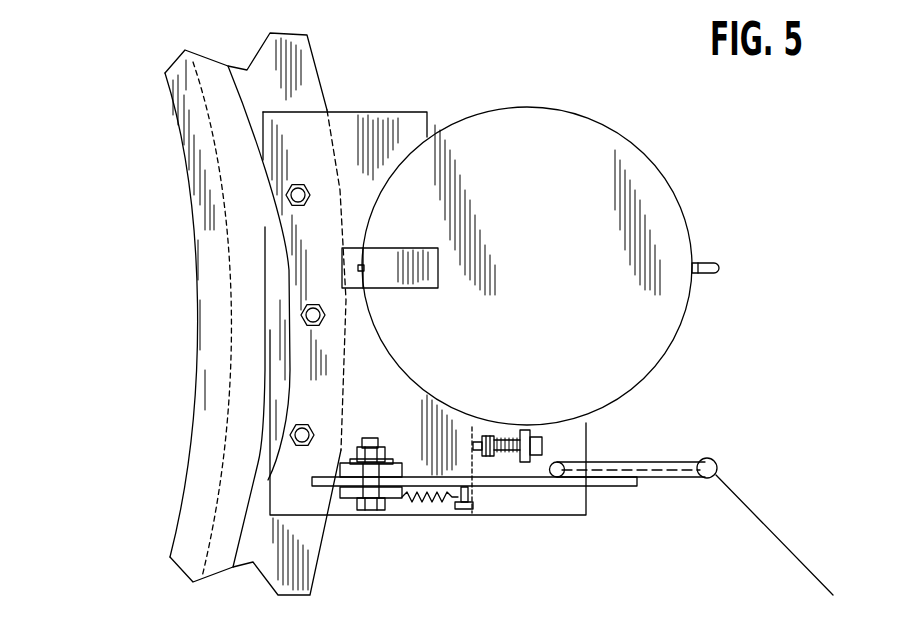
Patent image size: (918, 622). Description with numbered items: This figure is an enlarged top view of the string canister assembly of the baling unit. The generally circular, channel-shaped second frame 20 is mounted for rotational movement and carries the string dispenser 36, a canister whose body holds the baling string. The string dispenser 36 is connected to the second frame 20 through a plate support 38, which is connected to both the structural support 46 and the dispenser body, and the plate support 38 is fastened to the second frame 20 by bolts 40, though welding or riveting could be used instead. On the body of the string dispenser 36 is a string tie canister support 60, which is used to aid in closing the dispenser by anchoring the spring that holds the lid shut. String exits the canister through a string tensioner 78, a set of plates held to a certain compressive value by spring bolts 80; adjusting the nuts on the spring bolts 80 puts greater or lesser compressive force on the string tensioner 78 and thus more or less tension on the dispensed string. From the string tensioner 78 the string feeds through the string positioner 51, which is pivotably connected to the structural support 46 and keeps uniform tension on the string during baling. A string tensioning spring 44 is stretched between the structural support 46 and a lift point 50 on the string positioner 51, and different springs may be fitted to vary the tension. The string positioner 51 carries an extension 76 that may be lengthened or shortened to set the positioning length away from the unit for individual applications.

The second frame 20 is at (198, 525).
The string dispenser 36 is at (595, 140).
The plate support 38 is at (308, 245).
The bolts 40 is at (293, 427).
The string tensioning spring 44 is at (427, 515).
The structural support 46 is at (350, 515).
The lift point 50 is at (465, 515).
The string positioner 51 is at (530, 463).
The string tie canister support 60 is at (720, 267).
The extension 76 is at (673, 474).
The string tensioner 78 is at (529, 432).
The spring bolts 80 is at (482, 452).